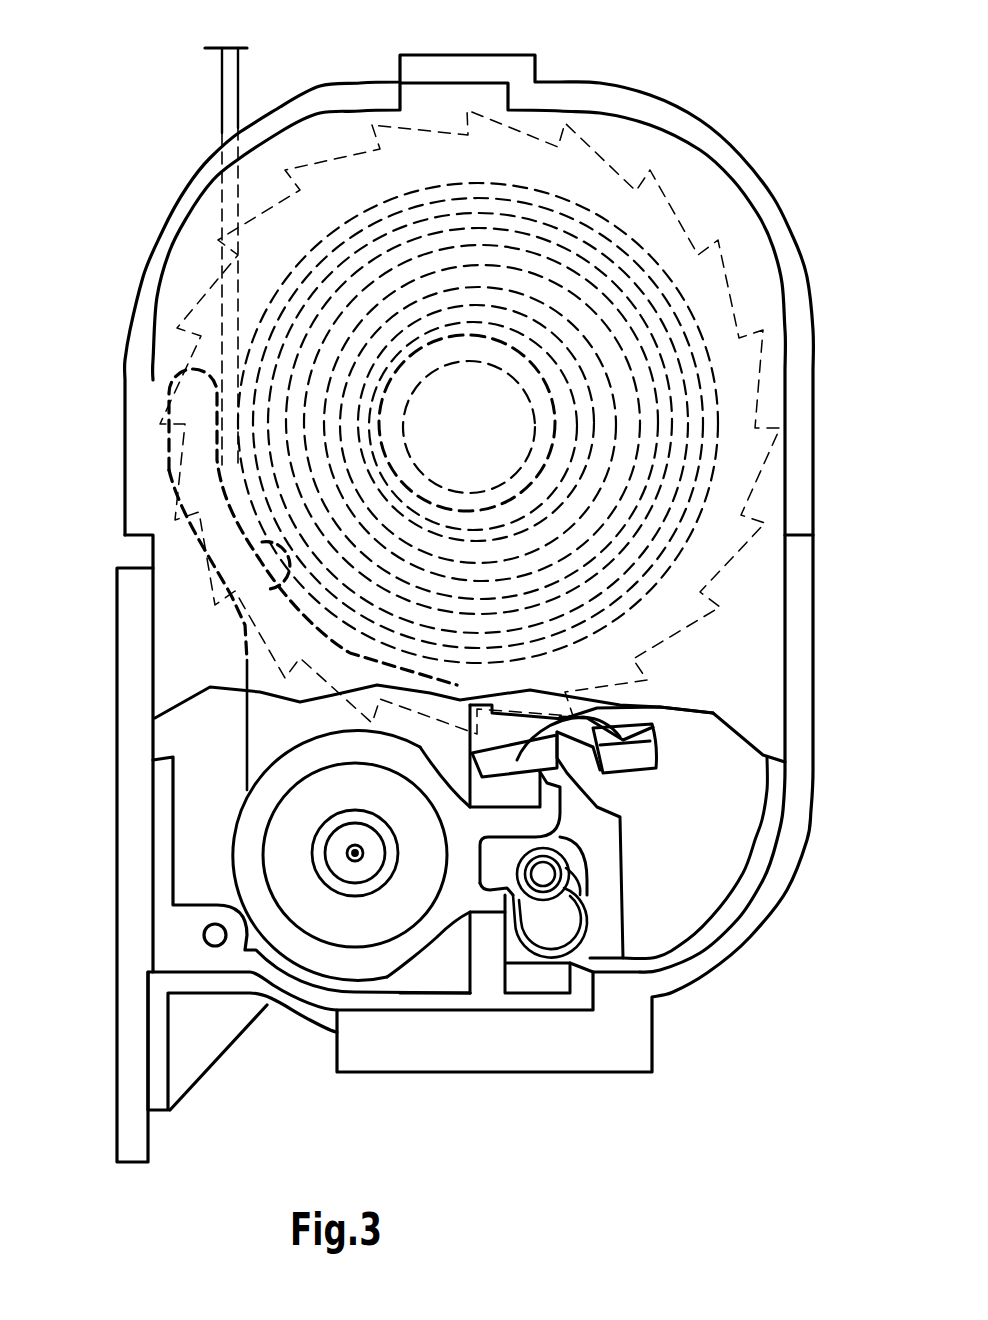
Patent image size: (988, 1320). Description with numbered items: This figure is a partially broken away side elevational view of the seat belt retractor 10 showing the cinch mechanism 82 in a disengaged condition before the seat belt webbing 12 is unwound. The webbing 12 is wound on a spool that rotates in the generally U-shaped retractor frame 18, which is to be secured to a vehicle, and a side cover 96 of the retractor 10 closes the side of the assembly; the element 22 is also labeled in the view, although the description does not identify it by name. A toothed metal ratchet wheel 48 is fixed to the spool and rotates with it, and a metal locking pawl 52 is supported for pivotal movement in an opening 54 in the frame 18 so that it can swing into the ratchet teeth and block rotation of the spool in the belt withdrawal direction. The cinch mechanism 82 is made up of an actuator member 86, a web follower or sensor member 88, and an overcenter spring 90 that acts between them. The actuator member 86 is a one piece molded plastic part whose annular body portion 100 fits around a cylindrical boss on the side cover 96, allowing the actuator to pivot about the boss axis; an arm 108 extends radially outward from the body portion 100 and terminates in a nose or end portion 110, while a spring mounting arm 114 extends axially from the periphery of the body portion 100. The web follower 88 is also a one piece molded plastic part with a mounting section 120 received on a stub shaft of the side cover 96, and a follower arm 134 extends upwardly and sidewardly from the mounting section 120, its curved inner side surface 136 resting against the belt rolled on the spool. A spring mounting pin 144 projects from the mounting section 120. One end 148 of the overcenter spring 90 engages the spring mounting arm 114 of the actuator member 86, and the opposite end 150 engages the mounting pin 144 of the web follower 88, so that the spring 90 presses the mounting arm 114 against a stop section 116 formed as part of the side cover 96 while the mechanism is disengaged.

The seat belt retractor 10 is at (770, 104).
The seat belt webbing 12 is at (222, 83).
The retractor frame 18 is at (683, 883).
The housing side wall 22 is at (723, 828).
The ratchet wheel 48 is at (516, 754).
The locking pawl 52 is at (620, 705).
The opening 54 is at (622, 726).
The cinch mechanism 82 is at (312, 973).
The actuator member 86 is at (389, 958).
The web follower 88 is at (247, 663).
The overcenter spring 90 is at (562, 963).
The side cover 96 is at (759, 301).
The annular body portion 100 is at (247, 847).
The arm 108 is at (500, 822).
The end portion 110 is at (560, 790).
The spring mounting arm 114 is at (490, 905).
The stop section 116 is at (488, 905).
The mounting section 120 is at (433, 735).
The follower arm 134 is at (200, 428).
The curved inner side surface 136 is at (280, 547).
The spring mounting pin 144 is at (557, 887).
The end 148 is at (500, 890).
The opposite end 150 is at (547, 874).